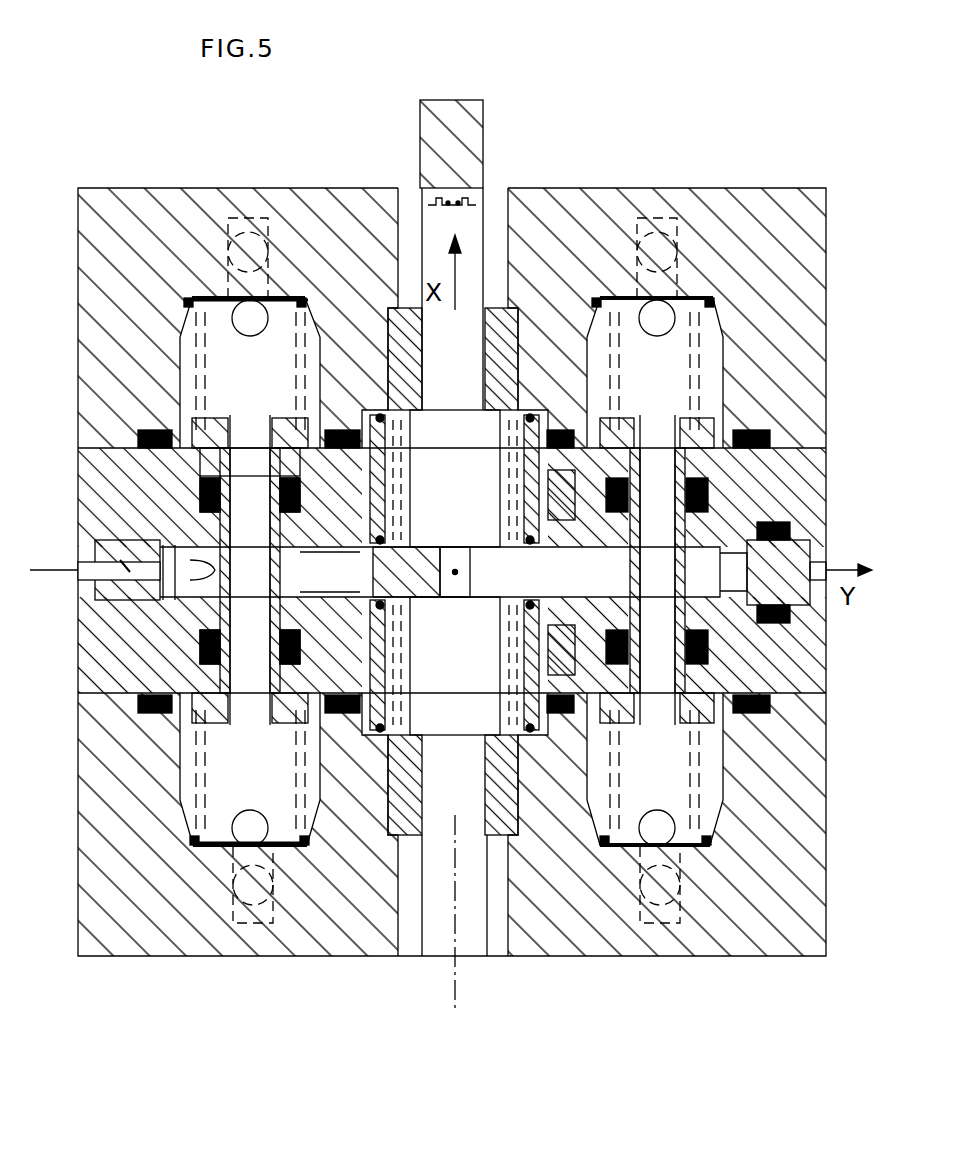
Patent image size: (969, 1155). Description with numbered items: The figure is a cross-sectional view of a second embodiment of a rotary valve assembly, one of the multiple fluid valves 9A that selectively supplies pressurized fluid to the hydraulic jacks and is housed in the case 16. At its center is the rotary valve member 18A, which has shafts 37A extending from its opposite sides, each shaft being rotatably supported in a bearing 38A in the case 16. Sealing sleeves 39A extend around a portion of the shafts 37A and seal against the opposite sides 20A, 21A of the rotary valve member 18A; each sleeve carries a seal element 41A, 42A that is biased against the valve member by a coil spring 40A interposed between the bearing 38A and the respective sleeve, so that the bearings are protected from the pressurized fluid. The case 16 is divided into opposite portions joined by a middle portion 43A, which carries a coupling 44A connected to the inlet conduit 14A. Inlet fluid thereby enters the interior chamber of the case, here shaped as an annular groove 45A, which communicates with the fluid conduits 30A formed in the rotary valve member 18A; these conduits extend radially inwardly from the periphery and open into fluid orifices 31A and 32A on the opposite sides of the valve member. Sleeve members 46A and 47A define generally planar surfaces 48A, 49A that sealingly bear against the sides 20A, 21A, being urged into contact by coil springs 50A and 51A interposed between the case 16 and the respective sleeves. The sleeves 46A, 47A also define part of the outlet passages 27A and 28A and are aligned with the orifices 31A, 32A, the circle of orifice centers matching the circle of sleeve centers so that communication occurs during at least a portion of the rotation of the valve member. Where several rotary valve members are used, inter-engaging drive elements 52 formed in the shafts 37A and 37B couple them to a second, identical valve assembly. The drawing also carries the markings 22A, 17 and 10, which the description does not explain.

The valve 9A is at (826, 240).
The inlet conduit 14A is at (53, 552).
The case 16 is at (815, 450).
The rotary valve member 18A is at (700, 600).
The side of rotary valve member 20A is at (330, 535).
The side of rotary valve member 21A is at (330, 605).
The axis 22A is at (458, 985).
The outlet passage 27A is at (237, 358).
The outlet passage 28A is at (195, 842).
The fluid conduit 30A is at (222, 585).
The fluid orifice 31A is at (225, 520).
The fluid orifice 32A is at (215, 650).
The shaft 37A is at (480, 477).
The shaft 37B is at (470, 150).
The bearing 38A is at (512, 345).
The sealing sleeve 39A is at (518, 428).
The coil spring 40A is at (500, 415).
The seal element 41A is at (532, 520).
The seal element 42A is at (540, 608).
The middle portion 43A is at (110, 598).
The coupling 44A is at (108, 560).
The annular groove 45A is at (170, 602).
The sleeve member 46A is at (215, 460).
The sleeve member 47A is at (230, 700).
The planar surface 48A is at (300, 552).
The planar surface 49A is at (300, 592).
The coil spring 50A is at (202, 298).
The coil spring 51A is at (300, 845).
The inter-engaging drive elements 52 is at (440, 208).
The section 17 is at (459, 570).
The section 10 is at (462, 583).